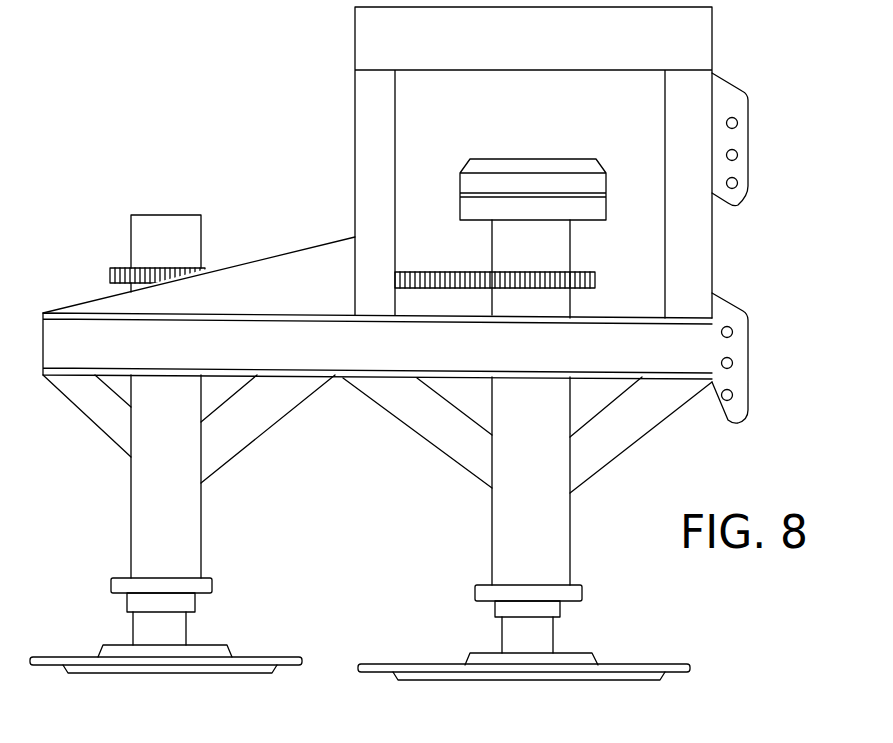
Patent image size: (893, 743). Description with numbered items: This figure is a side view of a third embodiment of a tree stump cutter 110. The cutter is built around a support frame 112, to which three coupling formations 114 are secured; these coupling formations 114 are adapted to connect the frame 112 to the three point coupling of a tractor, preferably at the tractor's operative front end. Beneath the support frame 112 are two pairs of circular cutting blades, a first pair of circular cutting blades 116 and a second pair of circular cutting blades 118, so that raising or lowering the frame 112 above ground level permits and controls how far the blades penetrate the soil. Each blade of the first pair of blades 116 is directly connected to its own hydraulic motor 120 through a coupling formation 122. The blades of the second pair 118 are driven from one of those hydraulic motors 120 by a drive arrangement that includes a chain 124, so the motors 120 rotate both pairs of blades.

The tree stump cutter 110 is at (233, 208).
The support frame 112 is at (698, 50).
The coupling formations 114 is at (743, 192).
The first pair of circular cutting blades 116 is at (636, 664).
The second pair of circular cutting blades 118 is at (265, 660).
The hydraulic motor 120 is at (594, 186).
The coupling formation 122 is at (208, 590).
The chain 124 is at (428, 276).